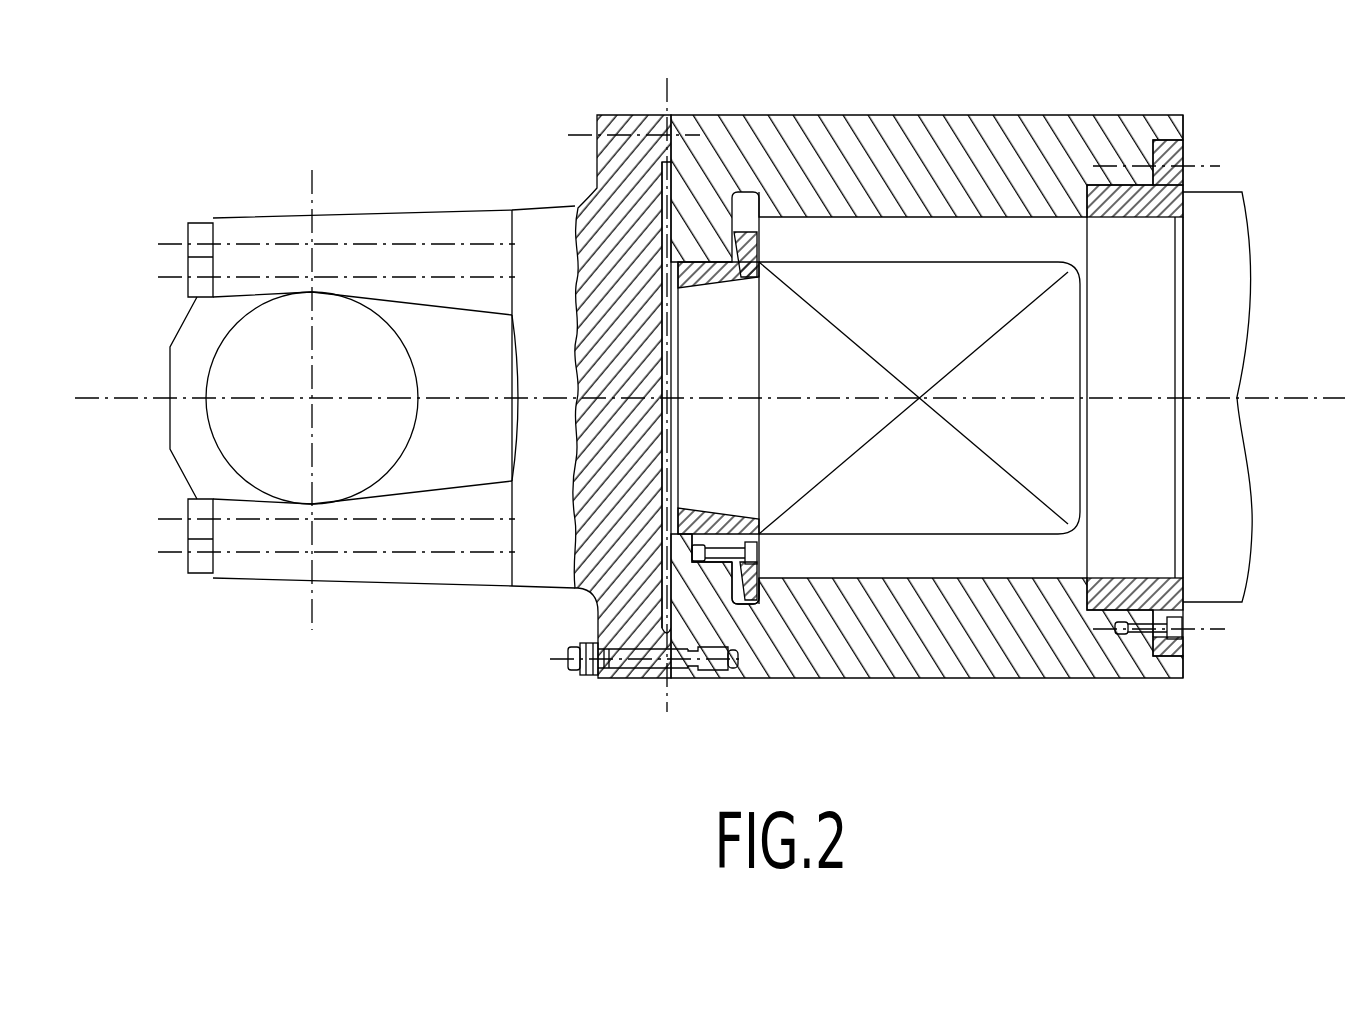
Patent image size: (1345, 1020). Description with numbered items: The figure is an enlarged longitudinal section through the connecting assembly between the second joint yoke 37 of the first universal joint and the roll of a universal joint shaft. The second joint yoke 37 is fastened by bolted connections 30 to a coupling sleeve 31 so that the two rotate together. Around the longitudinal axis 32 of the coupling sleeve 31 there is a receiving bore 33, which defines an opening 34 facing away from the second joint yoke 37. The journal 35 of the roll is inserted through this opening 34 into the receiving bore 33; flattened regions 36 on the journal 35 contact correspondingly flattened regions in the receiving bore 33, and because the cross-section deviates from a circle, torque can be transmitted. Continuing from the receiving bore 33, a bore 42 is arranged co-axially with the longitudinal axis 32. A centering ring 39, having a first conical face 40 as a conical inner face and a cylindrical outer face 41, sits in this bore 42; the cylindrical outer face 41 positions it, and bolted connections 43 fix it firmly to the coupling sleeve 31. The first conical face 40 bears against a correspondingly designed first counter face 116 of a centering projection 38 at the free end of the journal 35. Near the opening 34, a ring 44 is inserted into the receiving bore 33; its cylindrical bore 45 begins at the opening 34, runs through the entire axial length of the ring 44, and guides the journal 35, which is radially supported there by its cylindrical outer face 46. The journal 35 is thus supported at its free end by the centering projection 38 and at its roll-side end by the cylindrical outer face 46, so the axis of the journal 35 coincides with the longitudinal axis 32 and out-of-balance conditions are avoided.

The bolted connections 30 is at (637, 665).
The coupling sleeve 31 is at (945, 660).
The longitudinal axis 32 is at (1283, 406).
The receiving bore 33 is at (924, 216).
The opening 34 is at (1187, 310).
The journal 35 is at (913, 505).
The flattened regions 36 is at (947, 262).
The second joint yoke 37 is at (477, 235).
The centering projection 38 is at (732, 387).
The centering ring 39 is at (693, 520).
The first conical face 40 is at (738, 527).
The cylindrical outer face 41 is at (695, 540).
The bore 42 is at (718, 530).
The bolted connections 43 is at (748, 550).
The ring 44 is at (1140, 200).
The cylindrical bore 45 is at (1103, 222).
The cylindrical outer face 46 is at (1172, 188).
The first counter face 116 is at (758, 240).